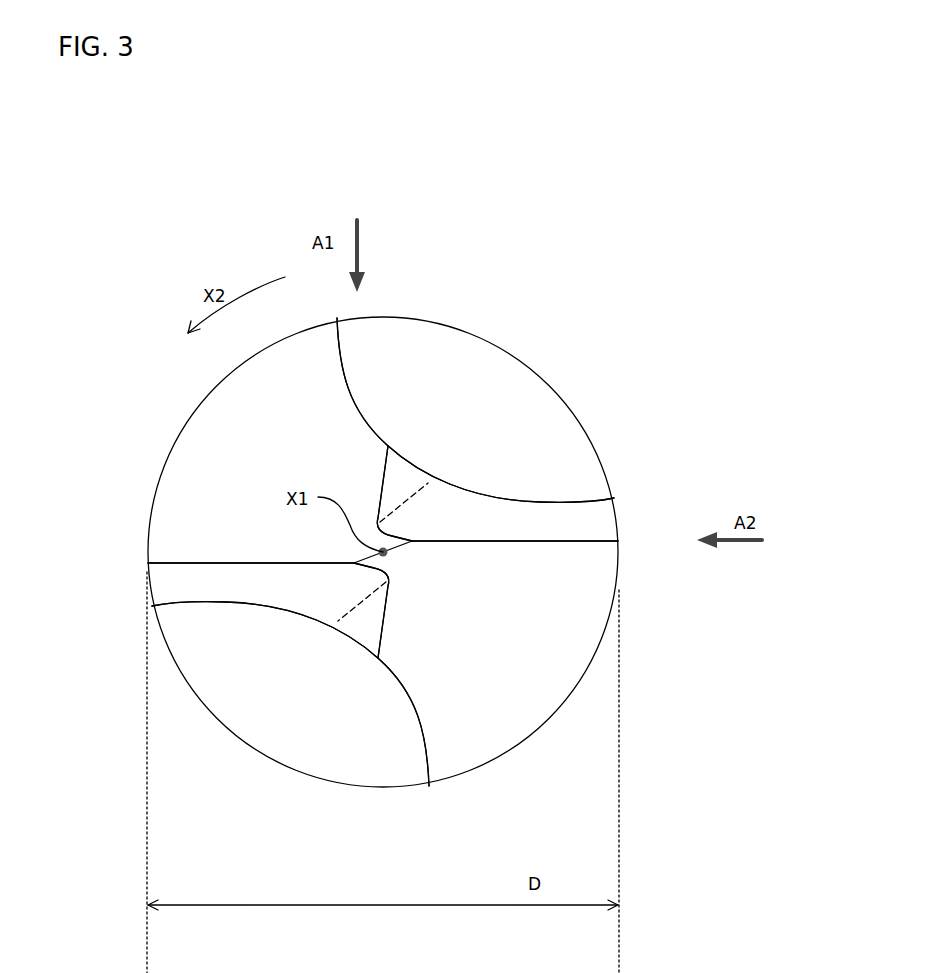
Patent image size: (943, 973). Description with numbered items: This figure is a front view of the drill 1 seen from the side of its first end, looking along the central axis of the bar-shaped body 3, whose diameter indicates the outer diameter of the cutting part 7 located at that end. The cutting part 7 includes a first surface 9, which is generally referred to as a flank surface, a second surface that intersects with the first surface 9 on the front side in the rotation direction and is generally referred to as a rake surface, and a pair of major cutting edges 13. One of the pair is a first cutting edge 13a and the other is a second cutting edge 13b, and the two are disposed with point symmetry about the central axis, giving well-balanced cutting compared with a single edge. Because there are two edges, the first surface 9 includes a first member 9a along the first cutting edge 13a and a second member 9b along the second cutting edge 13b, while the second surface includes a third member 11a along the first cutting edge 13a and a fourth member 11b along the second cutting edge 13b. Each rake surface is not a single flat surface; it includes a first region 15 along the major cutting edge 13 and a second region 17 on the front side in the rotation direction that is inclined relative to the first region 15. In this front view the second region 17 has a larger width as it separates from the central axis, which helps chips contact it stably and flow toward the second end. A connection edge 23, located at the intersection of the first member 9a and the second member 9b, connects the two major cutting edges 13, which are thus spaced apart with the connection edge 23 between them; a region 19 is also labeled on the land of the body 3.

The drill 1 is at (565, 322).
The body 3 is at (408, 320).
The cutting part 7 is at (383, 552).
The first surface 9 is at (377, 563).
The first member 9a is at (507, 708).
The second member 9b is at (240, 483).
The third member 11a is at (405, 482).
The fourth member 11b is at (362, 623).
The major cutting edge 13 is at (398, 483).
The first cutting edge 13a is at (580, 541).
The second cutting edge 13b is at (218, 562).
The first region 15 is at (528, 523).
The second region 17 is at (488, 606).
The land 19 is at (460, 367).
The connection edge 23 is at (410, 547).